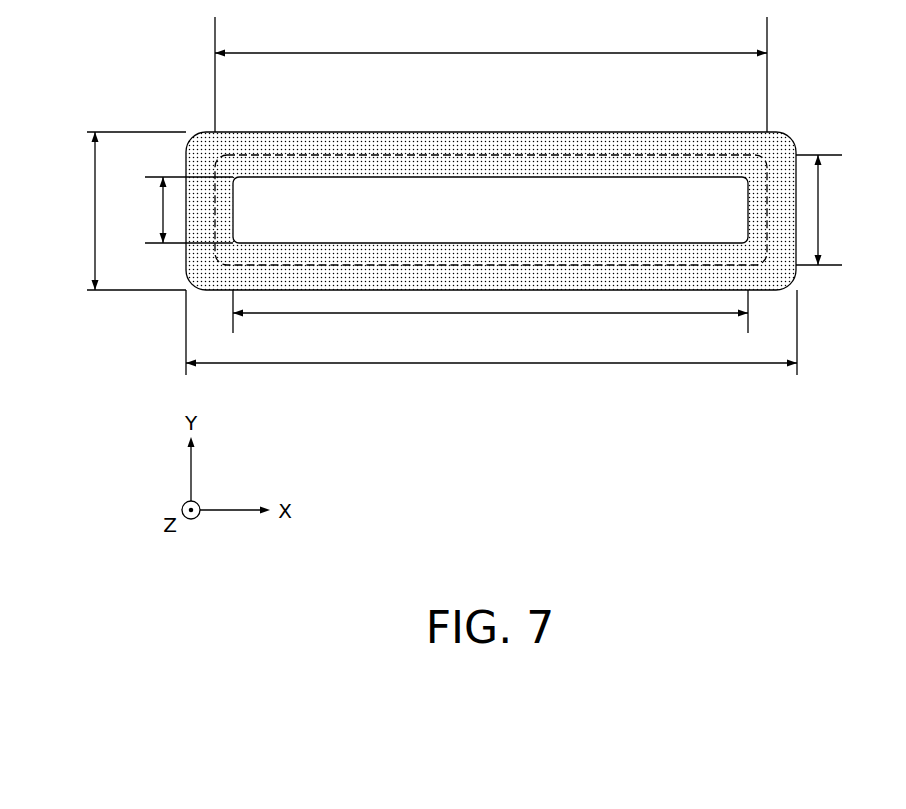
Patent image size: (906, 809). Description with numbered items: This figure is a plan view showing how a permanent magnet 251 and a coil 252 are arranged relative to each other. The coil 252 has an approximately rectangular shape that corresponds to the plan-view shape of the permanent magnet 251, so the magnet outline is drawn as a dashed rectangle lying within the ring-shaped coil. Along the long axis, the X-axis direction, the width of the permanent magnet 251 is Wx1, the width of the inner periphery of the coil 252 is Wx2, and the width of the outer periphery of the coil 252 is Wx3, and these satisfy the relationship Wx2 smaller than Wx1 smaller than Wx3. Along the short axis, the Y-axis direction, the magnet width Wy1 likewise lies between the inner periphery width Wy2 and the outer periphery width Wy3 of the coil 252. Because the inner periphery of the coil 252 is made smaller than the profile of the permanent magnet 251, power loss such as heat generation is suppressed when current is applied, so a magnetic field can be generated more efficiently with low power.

The permanent magnet 251 is at (357, 200).
The coil 252 is at (463, 143).
The width of the permanent magnet in the long axis direction Wx1 is at (491, 74).
The width of the inner periphery of the coil in the long axis direction Wx2 is at (490, 316).
The width of the outer periphery of the coil in the long axis direction Wx3 is at (491, 341).
The width of the permanent magnet in the short axis direction Wy1 is at (833, 210).
The width of the inner periphery of the coil in the short axis direction Wy2 is at (172, 210).
The width of the outer periphery of the coil in the short axis direction Wy3 is at (113, 211).